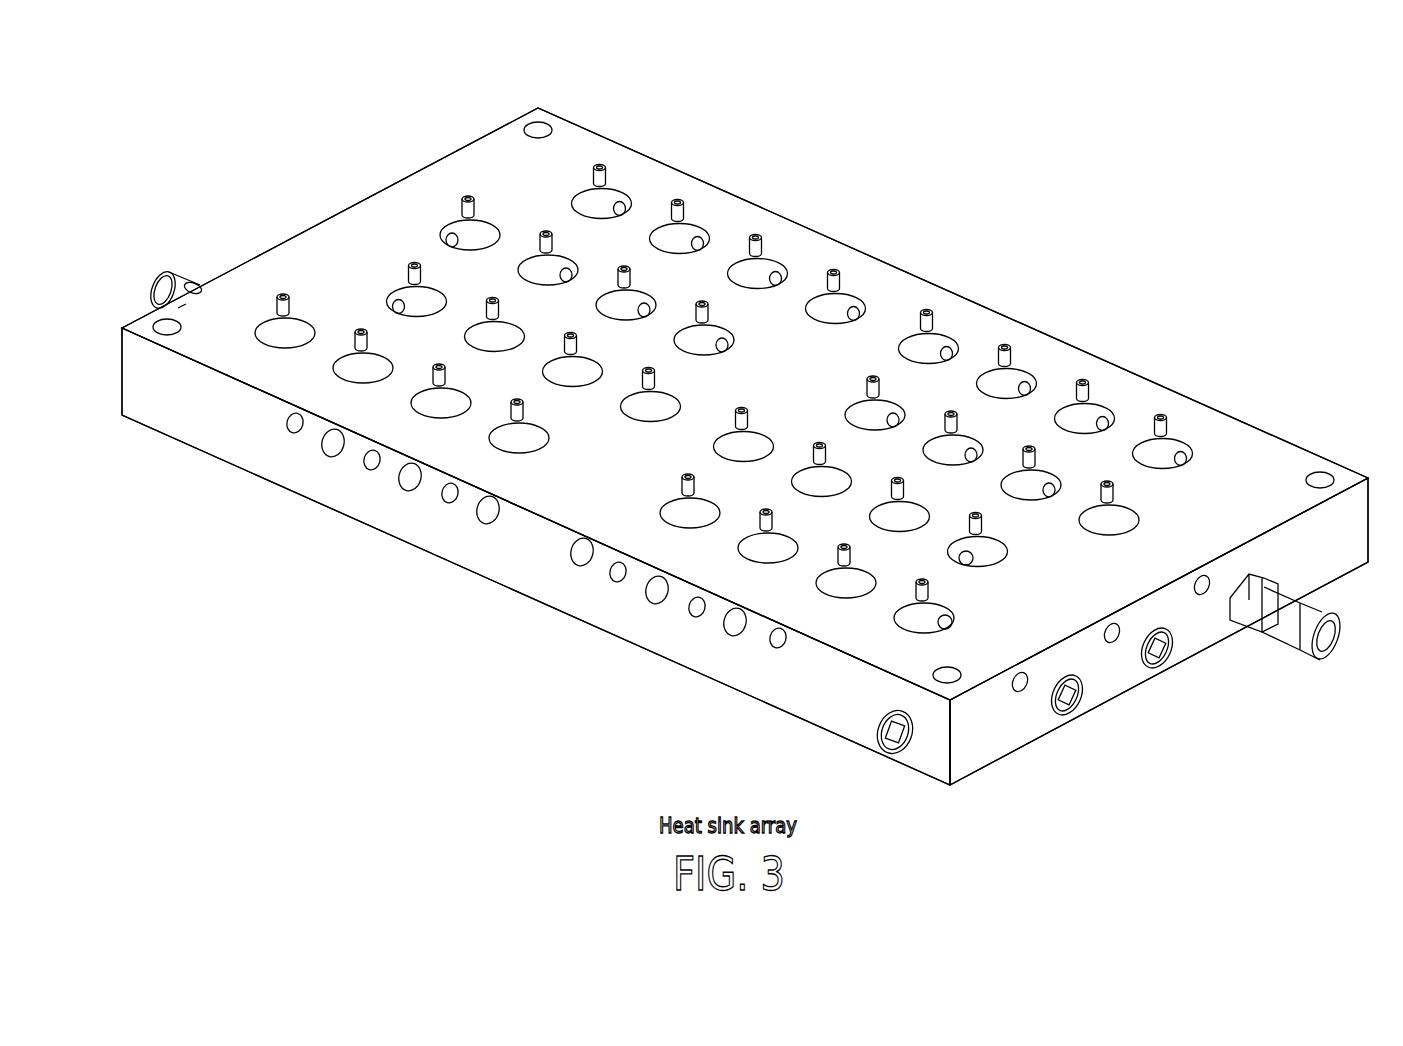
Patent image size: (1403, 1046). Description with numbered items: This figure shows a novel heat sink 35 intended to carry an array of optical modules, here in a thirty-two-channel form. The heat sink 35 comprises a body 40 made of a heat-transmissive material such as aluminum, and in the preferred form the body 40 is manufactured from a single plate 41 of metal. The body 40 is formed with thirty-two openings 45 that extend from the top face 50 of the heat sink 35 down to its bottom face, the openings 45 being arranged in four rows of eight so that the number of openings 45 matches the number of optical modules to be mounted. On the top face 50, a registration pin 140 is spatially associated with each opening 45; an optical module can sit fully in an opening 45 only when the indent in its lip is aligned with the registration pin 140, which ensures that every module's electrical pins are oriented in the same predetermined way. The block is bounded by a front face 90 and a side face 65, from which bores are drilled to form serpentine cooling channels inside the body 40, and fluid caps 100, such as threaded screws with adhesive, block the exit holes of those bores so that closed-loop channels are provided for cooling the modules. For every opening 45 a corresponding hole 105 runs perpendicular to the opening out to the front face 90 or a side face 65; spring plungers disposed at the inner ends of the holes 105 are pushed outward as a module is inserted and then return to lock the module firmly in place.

The heat sink 35 is at (807, 106).
The body 40 is at (914, 259).
The single plate 41 is at (1136, 398).
The registration pin 140 is at (1024, 340).
The openings 45 is at (972, 565).
The top face 50 is at (1258, 490).
The front face 90 is at (768, 701).
The holes 105 is at (356, 475).
The fluid caps 100 is at (875, 755).
The side face 65 is at (975, 742).